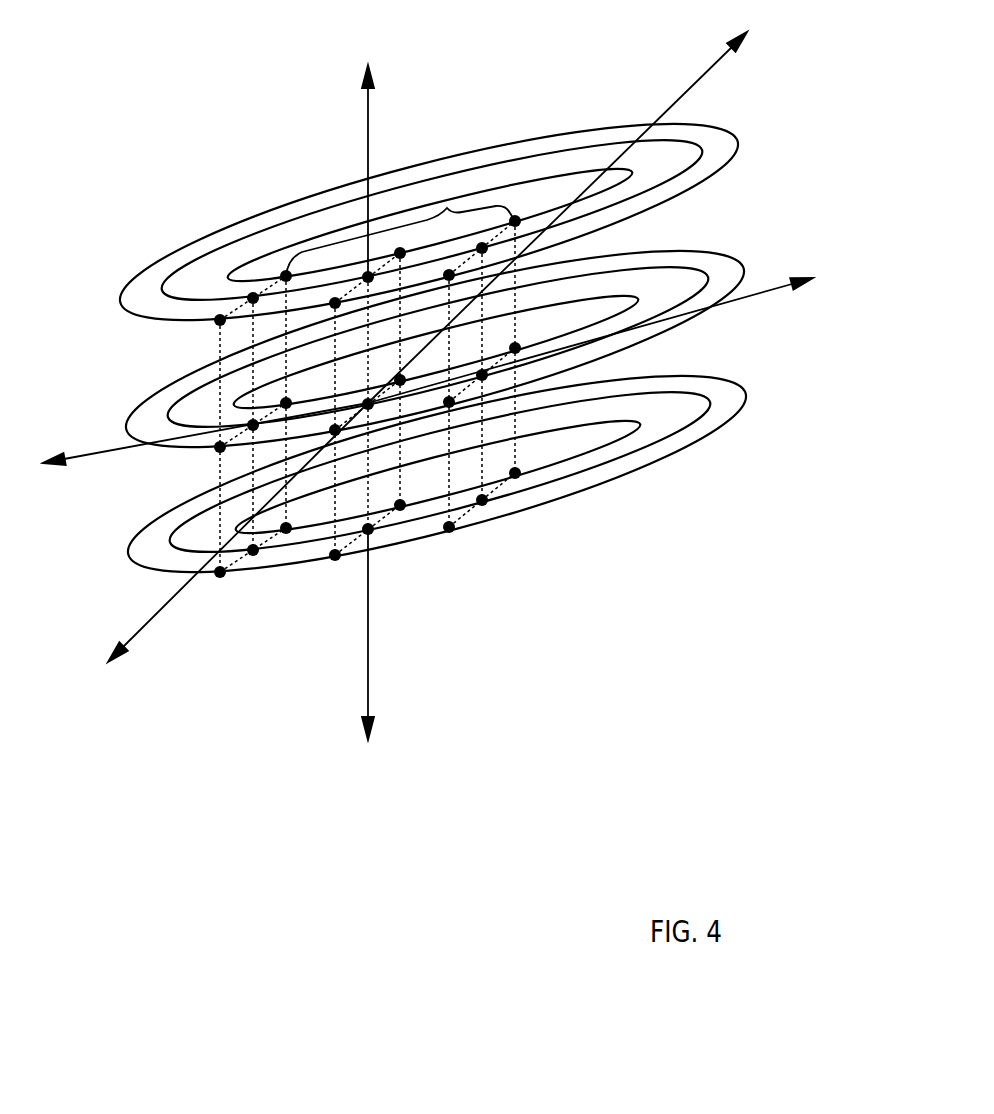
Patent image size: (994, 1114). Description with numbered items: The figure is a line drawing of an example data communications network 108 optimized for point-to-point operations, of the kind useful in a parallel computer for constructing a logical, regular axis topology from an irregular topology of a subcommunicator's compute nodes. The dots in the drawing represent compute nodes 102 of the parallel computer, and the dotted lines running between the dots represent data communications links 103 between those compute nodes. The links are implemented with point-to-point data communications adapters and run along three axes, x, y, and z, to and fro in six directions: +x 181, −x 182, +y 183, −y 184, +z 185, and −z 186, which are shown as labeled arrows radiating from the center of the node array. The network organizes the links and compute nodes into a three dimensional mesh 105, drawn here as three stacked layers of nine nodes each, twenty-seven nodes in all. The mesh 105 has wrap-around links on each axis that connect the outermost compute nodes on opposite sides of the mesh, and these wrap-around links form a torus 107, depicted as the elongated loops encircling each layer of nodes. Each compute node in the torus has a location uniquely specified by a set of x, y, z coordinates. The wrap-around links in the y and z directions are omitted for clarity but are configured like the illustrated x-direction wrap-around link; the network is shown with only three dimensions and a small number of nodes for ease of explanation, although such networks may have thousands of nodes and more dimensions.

The compute nodes 102 is at (515, 472).
The data communications links 103 is at (222, 474).
The three dimensional mesh 105 is at (458, 200).
The torus 107 is at (195, 218).
The data communications network 108 is at (420, 526).
The +x direction 181 is at (848, 305).
The −x direction 182 is at (42, 502).
The +y direction 183 is at (788, 56).
The −y direction 184 is at (103, 710).
The +z direction 185 is at (383, 57).
The −z direction 186 is at (386, 800).